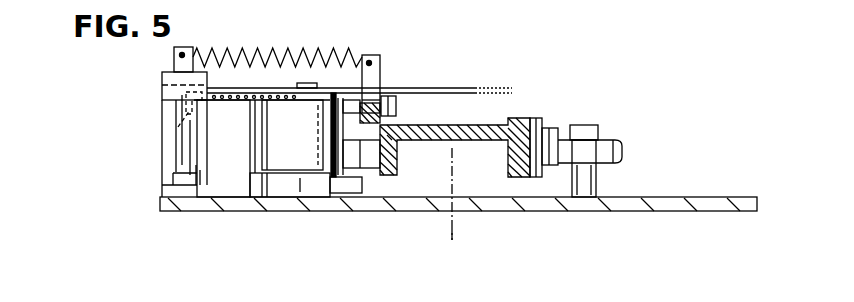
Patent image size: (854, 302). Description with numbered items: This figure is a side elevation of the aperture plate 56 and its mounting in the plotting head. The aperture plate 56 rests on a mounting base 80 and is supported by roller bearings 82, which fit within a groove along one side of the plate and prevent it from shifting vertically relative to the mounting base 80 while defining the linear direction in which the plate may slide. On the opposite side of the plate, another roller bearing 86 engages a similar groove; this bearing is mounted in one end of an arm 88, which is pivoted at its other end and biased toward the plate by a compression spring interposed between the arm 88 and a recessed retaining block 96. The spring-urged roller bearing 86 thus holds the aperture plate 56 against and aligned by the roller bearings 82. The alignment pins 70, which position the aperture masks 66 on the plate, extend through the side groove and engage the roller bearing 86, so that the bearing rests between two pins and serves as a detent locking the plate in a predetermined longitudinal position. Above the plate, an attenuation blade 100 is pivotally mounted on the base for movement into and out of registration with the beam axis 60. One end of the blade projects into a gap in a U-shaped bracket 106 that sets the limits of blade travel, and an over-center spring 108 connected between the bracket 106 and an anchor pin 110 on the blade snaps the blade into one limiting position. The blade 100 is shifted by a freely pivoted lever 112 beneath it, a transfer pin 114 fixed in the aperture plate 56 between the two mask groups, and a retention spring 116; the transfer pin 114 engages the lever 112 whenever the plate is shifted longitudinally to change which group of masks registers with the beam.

The aperture plate 56 is at (490, 148).
The beam axis 60 is at (454, 236).
The aperture masks 66 is at (510, 118).
The alignment pins 70 is at (542, 118).
The mounting base 80 is at (690, 198).
The roller bearings 82 is at (622, 150).
The roller bearing 86 is at (347, 155).
The arm 88 is at (304, 141).
The recessed retaining block 96 is at (232, 141).
The attenuation blade 100 is at (463, 88).
The U-shaped bracket 106 is at (165, 102).
The over-center spring 108 is at (263, 53).
The anchor pin 110 is at (379, 57).
The lever 112 is at (368, 102).
The transfer pin 114 is at (397, 103).
The retention spring 116 is at (178, 127).